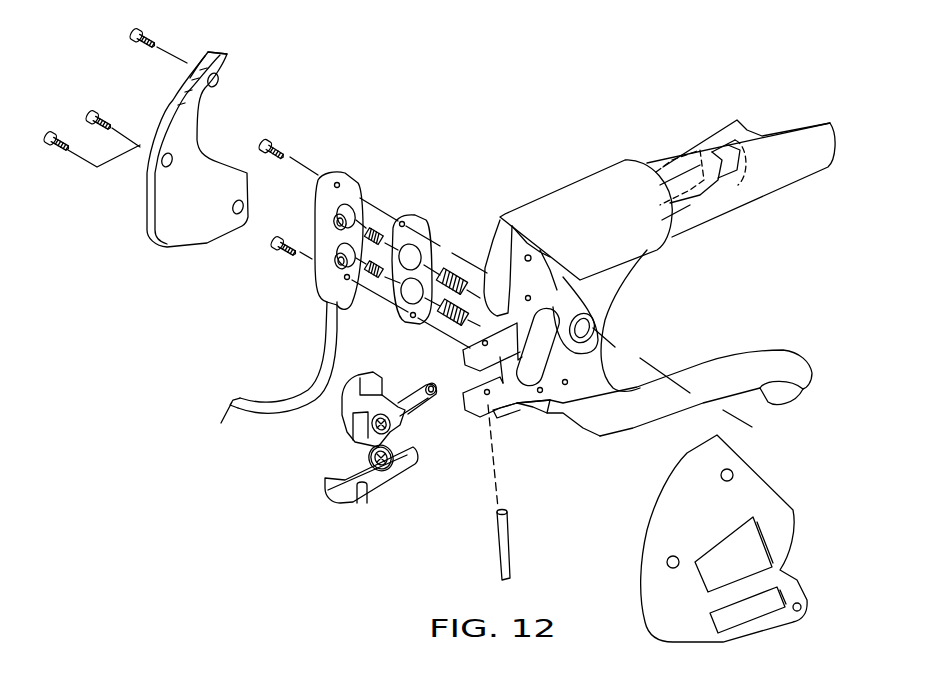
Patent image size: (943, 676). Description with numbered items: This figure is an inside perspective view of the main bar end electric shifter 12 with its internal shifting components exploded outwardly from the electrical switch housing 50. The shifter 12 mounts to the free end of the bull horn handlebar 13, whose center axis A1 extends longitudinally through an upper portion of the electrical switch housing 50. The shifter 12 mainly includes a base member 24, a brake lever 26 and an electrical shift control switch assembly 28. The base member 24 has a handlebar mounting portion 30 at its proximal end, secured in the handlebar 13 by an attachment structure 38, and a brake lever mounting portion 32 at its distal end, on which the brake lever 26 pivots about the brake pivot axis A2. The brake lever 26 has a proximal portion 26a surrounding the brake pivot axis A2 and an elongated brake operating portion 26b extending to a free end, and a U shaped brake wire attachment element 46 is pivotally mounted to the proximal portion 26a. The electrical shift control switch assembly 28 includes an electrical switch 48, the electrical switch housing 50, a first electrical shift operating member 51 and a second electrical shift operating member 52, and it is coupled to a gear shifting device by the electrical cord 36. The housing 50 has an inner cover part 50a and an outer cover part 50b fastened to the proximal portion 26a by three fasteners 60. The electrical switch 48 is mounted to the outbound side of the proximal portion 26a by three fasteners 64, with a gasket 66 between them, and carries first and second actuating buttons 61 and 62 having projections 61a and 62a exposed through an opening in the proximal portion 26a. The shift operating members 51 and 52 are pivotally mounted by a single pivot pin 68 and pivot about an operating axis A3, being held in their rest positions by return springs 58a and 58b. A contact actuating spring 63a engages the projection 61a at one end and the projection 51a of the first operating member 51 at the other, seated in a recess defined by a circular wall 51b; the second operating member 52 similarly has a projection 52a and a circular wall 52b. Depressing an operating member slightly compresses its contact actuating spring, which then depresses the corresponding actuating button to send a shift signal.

The main bar end electric shifter 12 is at (218, 499).
The bull horn handlebar 13 is at (798, 183).
The base member 24 is at (591, 171).
The brake lever 26 is at (632, 432).
The proximal portion 26a is at (493, 404).
The elongated brake operating portion 26b is at (752, 356).
The electrical shift control switch assembly 28 is at (291, 319).
The handlebar mounting portion 30 is at (690, 222).
The brake lever mounting portion 32 is at (605, 287).
The electrical cord 36 is at (266, 404).
The attachment structure 38 is at (735, 204).
The U shaped brake wire attachment element 46 is at (550, 270).
The electrical switch 48 is at (342, 172).
The electrical switch housing 50 is at (146, 227).
The inner cover part 50a is at (763, 475).
The outer cover part 50b is at (205, 52).
The first electrical shift operating member 51 is at (367, 375).
The projection 51a is at (360, 434).
The circular wall 51b is at (387, 408).
The second electrical shift operating member 52 is at (328, 481).
The projection 52a is at (393, 465).
The circular wall 52b is at (384, 471).
The return spring 58a is at (448, 272).
The return spring 58b is at (450, 322).
The fasteners 60 is at (57, 134).
The first actuating button 61 is at (334, 226).
The projection 61a is at (338, 212).
The second actuating button 62 is at (330, 287).
The projection 62a is at (332, 258).
The contact actuating spring 63a is at (377, 229).
The fasteners 64 is at (265, 143).
The gasket 66 is at (422, 216).
The pivot pin 68 is at (507, 556).
The center axis A1 is at (830, 124).
The brake pivot axis A2 is at (627, 350).
The operating axis A3 is at (497, 498).